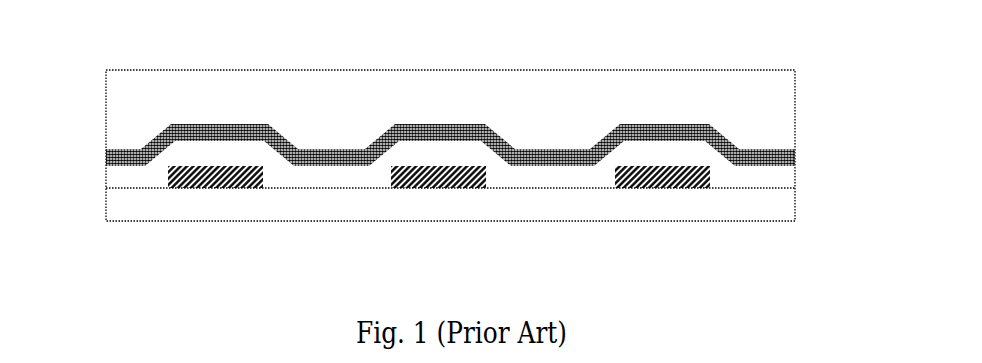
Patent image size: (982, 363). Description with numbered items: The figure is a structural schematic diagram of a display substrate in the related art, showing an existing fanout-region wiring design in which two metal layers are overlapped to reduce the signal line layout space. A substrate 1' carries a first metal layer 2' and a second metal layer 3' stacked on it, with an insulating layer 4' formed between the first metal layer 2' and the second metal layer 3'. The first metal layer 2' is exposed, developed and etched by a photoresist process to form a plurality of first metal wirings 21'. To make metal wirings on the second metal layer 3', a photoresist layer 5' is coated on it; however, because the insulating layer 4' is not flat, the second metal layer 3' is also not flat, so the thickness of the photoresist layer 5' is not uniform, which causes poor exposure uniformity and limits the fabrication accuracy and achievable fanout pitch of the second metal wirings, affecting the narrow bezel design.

The substrate 1' is at (493, 204).
The first metal layer 2' is at (376, 222).
The first metal wirings 21' is at (662, 224).
The second metal layer 3' is at (493, 146).
The insulating layer 4' is at (493, 178).
The photoresist layer 5' is at (493, 145).